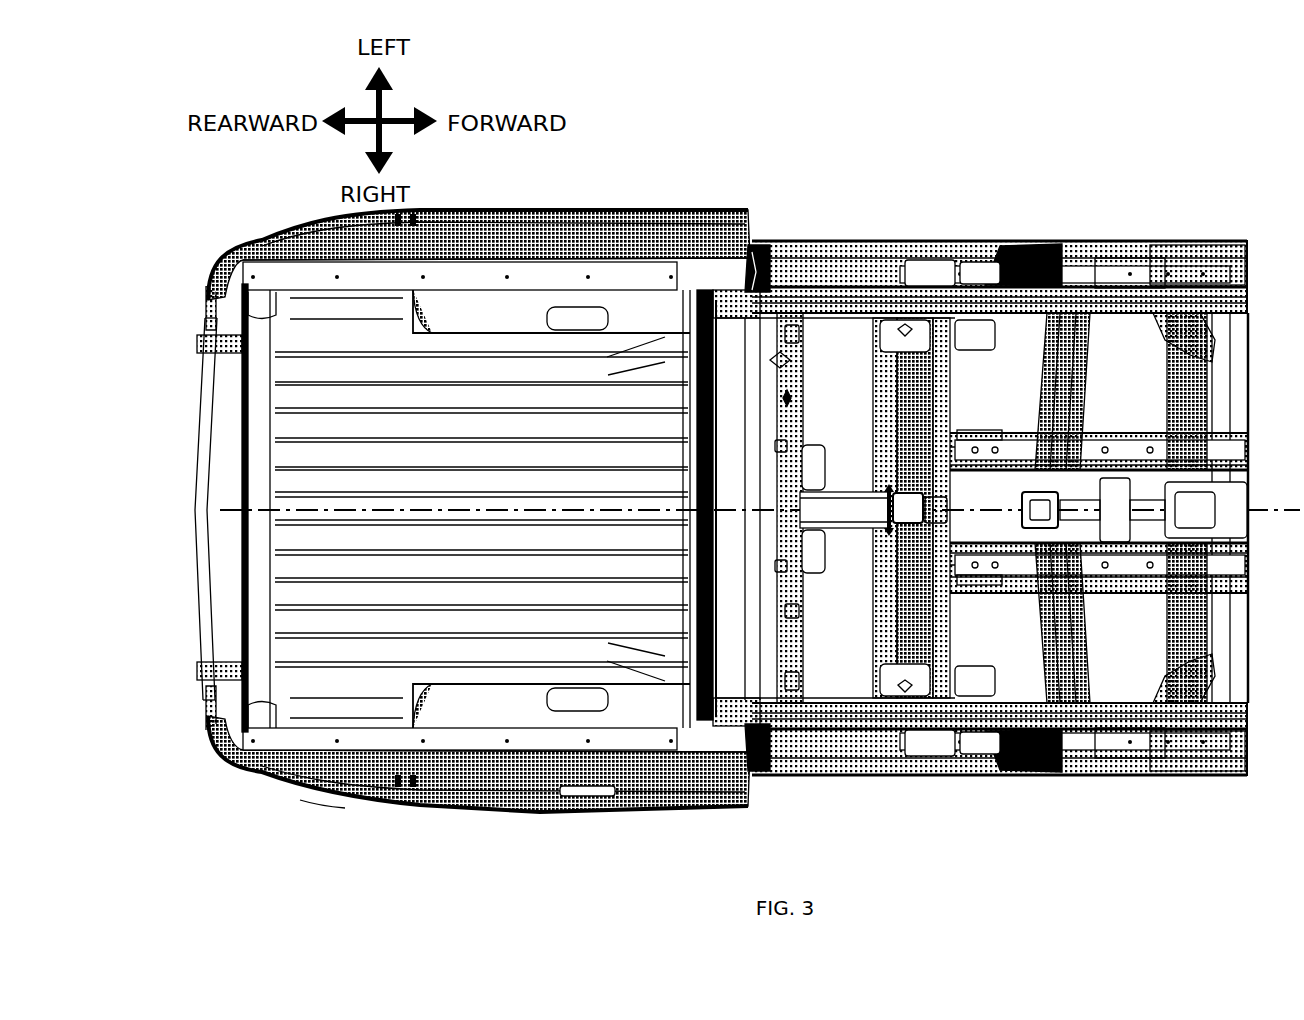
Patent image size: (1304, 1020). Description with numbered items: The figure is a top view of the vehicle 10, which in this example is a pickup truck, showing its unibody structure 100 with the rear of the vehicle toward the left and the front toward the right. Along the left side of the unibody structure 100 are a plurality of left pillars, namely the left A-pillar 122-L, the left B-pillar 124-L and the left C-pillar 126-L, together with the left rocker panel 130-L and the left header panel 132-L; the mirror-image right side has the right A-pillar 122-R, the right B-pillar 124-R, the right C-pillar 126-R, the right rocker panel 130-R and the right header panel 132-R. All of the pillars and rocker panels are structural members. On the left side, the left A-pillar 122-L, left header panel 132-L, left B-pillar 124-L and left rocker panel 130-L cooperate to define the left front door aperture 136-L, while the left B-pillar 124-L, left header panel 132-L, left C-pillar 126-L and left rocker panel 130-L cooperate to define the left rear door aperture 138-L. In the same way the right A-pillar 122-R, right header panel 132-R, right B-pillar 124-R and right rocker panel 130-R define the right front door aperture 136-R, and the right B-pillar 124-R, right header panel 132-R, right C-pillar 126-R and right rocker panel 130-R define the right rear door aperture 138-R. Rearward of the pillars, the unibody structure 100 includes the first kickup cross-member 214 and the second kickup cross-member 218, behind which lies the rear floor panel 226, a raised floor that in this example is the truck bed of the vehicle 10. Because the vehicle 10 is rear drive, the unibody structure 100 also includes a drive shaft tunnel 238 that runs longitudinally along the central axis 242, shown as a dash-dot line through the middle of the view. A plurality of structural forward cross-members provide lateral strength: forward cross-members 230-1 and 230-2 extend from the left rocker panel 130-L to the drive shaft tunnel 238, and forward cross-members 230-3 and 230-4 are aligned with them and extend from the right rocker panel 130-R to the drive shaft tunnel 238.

The vehicle 10 is at (238, 826).
The unibody structure 100 is at (343, 796).
The left A-pillar 122-L is at (1222, 252).
The right A-pillar 122-R is at (1233, 766).
The left B-pillar 124-L is at (990, 253).
The right B-pillar 124-R is at (1000, 765).
The left C-pillar 126-L is at (735, 272).
The right C-pillar 126-R is at (738, 790).
The left rocker panel 130-L is at (1153, 252).
The right rocker panel 130-R is at (1137, 766).
The left header panel 132-L is at (1050, 288).
The right header panel 132-R is at (1040, 745).
The left front door aperture 136-L is at (1195, 252).
The right front door aperture 136-R is at (1170, 766).
The left rear door aperture 138-L is at (955, 250).
The right rear door aperture 138-R is at (912, 768).
The first kickup cross-member 214 is at (910, 435).
The second kickup cross-member 218 is at (785, 365).
The rear floor panel 226 is at (363, 570).
The forward cross-member 230-1 is at (1200, 395).
The forward cross-member 230-2 is at (1085, 365).
The forward cross-member 230-3 is at (1197, 633).
The forward cross-member 230-4 is at (1045, 715).
The drive shaft tunnel 238 is at (1218, 495).
The central axis 242 is at (335, 507).